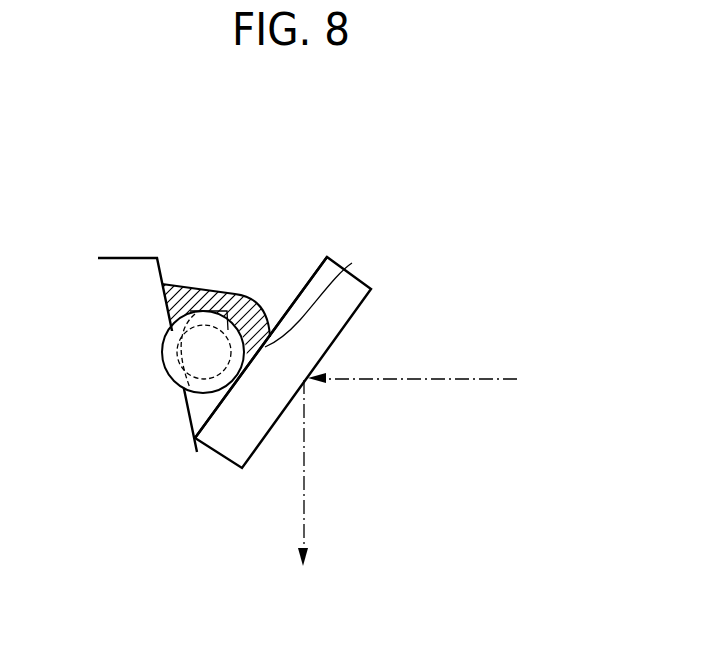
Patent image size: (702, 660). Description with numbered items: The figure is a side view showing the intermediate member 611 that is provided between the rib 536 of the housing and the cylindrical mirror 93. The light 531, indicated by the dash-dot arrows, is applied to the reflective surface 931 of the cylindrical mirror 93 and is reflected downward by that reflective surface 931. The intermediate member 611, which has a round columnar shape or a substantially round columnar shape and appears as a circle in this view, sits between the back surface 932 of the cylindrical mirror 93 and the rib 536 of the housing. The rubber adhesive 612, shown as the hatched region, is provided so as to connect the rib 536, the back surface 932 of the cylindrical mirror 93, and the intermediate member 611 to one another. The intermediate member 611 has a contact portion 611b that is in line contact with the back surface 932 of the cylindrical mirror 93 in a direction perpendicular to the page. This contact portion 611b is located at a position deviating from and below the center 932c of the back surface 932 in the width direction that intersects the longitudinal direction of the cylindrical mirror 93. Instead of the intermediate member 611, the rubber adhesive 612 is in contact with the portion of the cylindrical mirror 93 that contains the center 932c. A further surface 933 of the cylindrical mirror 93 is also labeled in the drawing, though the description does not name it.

The rib 536 is at (122, 268).
The intermediate member 611 is at (196, 287).
The rubber adhesive 612 is at (235, 293).
The contact portion 611b is at (238, 375).
The cylindrical mirror 93 is at (337, 247).
The reflective surface 931 is at (358, 311).
The back surface 932 is at (305, 283).
The center 932c is at (354, 262).
The pressing surface 933 is at (352, 263).
The light 531 is at (304, 472).